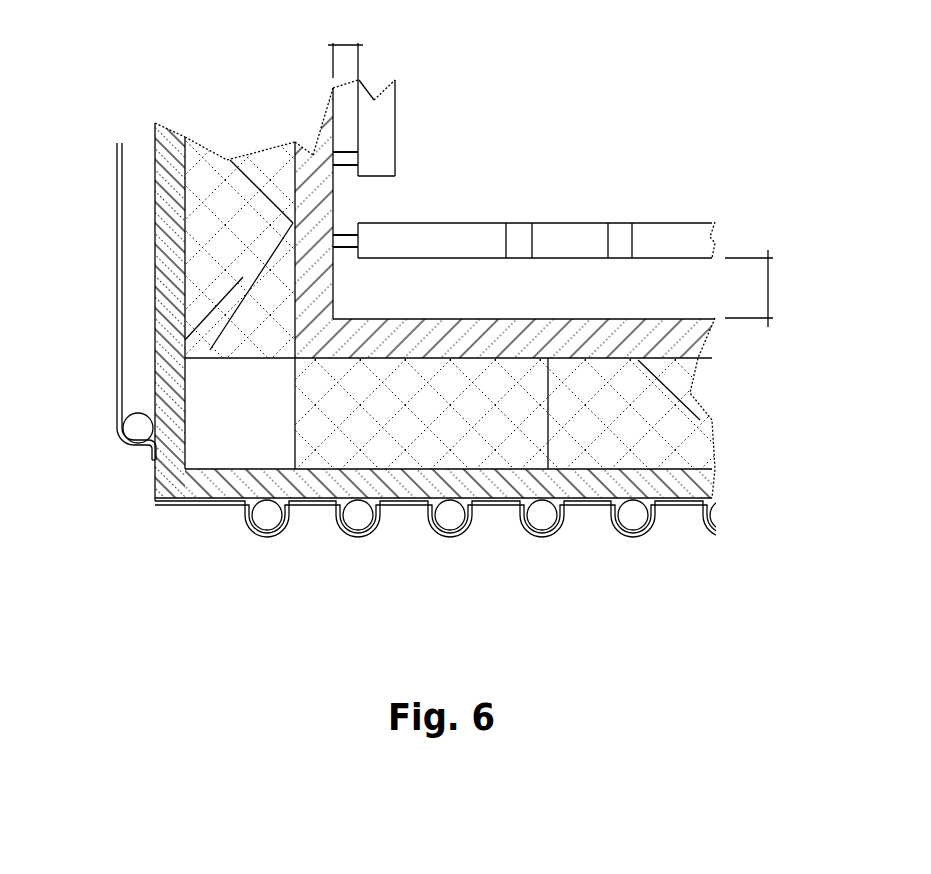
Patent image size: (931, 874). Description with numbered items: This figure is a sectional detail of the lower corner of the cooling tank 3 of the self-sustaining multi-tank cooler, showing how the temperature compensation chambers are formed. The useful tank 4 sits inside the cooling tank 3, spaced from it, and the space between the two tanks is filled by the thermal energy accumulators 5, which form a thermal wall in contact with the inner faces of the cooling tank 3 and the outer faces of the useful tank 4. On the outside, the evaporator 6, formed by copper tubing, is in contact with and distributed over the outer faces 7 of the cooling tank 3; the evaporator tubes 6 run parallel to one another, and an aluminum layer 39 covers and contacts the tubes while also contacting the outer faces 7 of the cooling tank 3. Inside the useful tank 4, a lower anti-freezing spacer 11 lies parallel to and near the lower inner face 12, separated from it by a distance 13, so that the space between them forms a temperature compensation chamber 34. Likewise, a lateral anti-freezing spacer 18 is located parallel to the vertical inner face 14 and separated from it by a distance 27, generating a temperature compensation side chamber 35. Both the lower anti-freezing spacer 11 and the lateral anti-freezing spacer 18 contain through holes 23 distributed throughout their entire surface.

The cooling tank 3 is at (220, 487).
The useful tank 4 is at (323, 175).
The thermal energy accumulators 5 is at (685, 435).
The evaporator 6 is at (137, 260).
The outer faces 7 is at (185, 500).
The lower anti-freezing spacer 11 is at (453, 245).
The lower inner face 12 is at (495, 318).
The distance 13 is at (768, 288).
The vertical inner face 14 is at (335, 213).
The lateral anti-freezing spacer 18 is at (390, 105).
The through holes 23 is at (521, 239).
The distance 27 is at (345, 45).
The temperature compensation chamber 34 is at (567, 303).
The temperature compensation side chamber 35 is at (347, 122).
The aluminum layer 39 is at (120, 320).